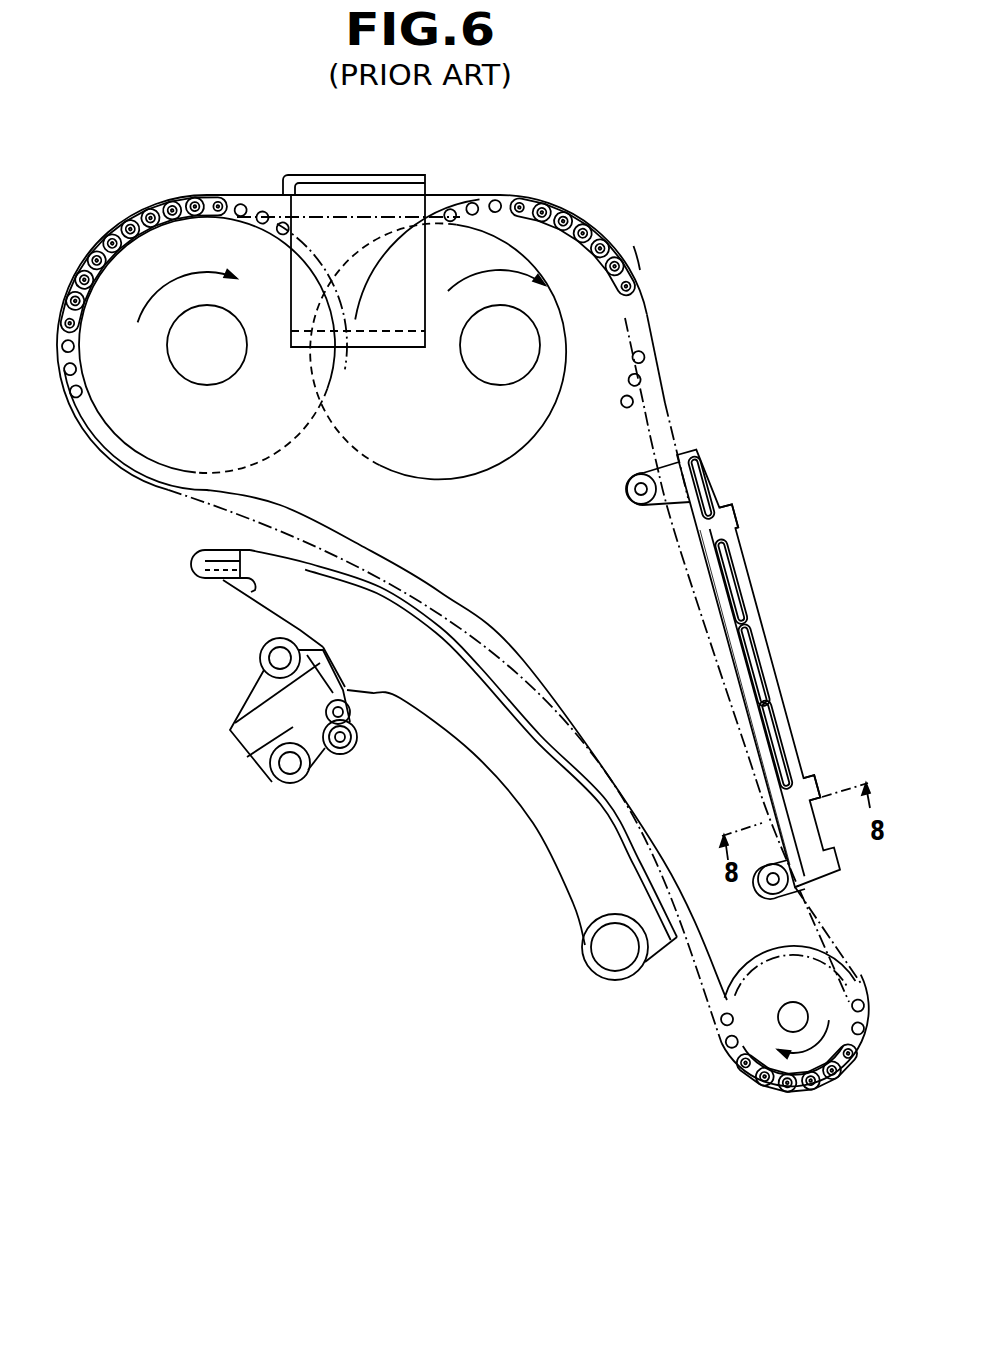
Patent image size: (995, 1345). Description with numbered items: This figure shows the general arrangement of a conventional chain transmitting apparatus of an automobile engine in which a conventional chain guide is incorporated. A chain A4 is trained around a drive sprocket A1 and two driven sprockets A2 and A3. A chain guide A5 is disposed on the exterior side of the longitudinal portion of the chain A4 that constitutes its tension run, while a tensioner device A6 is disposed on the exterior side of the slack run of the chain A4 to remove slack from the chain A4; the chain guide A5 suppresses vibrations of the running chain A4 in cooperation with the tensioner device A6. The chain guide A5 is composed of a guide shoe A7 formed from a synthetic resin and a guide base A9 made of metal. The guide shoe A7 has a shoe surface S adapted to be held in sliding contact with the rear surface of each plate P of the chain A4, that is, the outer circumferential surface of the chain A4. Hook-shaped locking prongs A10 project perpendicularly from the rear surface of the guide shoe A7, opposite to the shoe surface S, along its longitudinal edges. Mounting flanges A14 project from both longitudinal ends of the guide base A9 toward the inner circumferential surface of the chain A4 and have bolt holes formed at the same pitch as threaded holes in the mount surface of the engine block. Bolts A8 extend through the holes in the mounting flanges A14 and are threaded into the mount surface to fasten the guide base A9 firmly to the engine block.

The drive sprocket A1 is at (797, 1060).
The driven sprocket A2 is at (140, 263).
The driven sprocket A3 is at (587, 315).
The chain A4 is at (577, 212).
The plate P is at (627, 253).
The chain guide A5 is at (710, 698).
The tensioner device A6 is at (472, 755).
The guide shoe A7 is at (743, 667).
The bolts A8 is at (672, 704).
The guide base A9 is at (743, 592).
The locking prongs A10 is at (722, 527).
The mounting flanges A14 is at (625, 503).
The shoe surface S is at (720, 613).